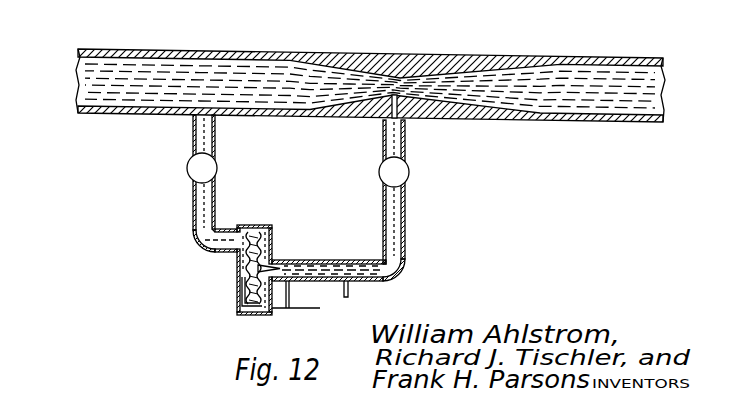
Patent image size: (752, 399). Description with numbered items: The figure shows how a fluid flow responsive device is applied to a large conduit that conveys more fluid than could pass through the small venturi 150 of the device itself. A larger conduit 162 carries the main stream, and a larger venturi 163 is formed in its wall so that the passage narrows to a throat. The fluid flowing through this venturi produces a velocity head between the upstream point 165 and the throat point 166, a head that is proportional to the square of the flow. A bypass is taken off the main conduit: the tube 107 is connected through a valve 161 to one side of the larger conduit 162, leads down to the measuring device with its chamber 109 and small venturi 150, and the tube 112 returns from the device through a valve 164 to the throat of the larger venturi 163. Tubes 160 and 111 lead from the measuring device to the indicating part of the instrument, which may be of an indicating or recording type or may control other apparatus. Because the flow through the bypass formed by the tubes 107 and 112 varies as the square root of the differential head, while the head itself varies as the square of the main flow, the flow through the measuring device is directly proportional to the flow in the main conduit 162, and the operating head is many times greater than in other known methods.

The larger conduit 162 is at (80, 115).
The larger venturi 163 is at (424, 72).
The upstream point of velocity head 165 is at (191, 117).
The valve 161 is at (187, 168).
The tube 107 is at (193, 212).
The mixing chamber 109 is at (240, 278).
The venturi 150 is at (297, 236).
The tube 160 is at (313, 309).
The throat point of velocity head 166 is at (385, 118).
The valve 164 is at (408, 172).
The tube 112 is at (406, 258).
The tube 111 is at (350, 290).